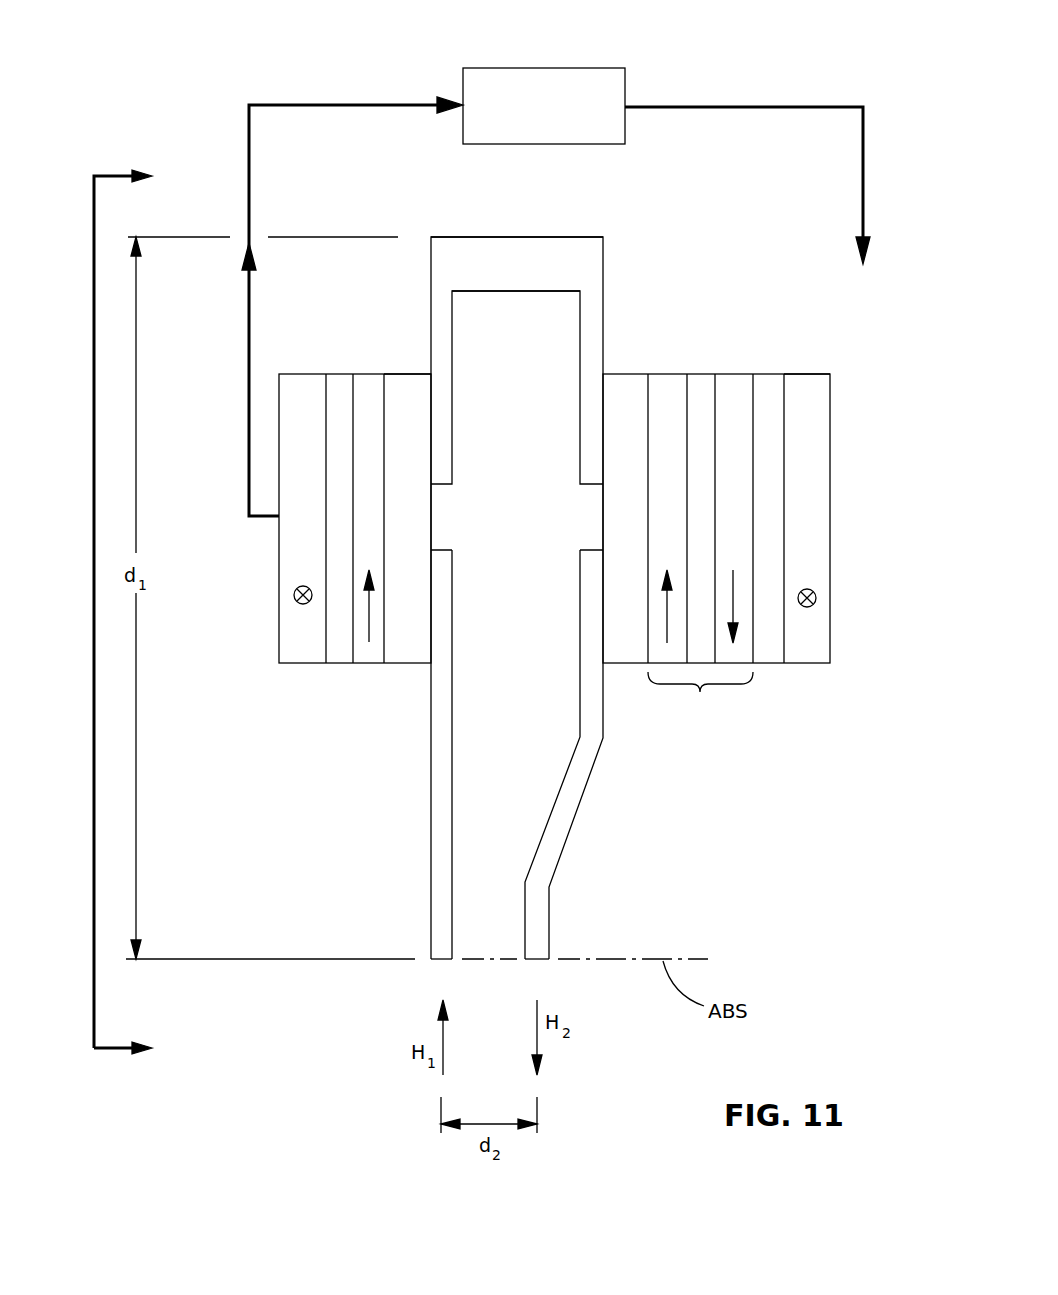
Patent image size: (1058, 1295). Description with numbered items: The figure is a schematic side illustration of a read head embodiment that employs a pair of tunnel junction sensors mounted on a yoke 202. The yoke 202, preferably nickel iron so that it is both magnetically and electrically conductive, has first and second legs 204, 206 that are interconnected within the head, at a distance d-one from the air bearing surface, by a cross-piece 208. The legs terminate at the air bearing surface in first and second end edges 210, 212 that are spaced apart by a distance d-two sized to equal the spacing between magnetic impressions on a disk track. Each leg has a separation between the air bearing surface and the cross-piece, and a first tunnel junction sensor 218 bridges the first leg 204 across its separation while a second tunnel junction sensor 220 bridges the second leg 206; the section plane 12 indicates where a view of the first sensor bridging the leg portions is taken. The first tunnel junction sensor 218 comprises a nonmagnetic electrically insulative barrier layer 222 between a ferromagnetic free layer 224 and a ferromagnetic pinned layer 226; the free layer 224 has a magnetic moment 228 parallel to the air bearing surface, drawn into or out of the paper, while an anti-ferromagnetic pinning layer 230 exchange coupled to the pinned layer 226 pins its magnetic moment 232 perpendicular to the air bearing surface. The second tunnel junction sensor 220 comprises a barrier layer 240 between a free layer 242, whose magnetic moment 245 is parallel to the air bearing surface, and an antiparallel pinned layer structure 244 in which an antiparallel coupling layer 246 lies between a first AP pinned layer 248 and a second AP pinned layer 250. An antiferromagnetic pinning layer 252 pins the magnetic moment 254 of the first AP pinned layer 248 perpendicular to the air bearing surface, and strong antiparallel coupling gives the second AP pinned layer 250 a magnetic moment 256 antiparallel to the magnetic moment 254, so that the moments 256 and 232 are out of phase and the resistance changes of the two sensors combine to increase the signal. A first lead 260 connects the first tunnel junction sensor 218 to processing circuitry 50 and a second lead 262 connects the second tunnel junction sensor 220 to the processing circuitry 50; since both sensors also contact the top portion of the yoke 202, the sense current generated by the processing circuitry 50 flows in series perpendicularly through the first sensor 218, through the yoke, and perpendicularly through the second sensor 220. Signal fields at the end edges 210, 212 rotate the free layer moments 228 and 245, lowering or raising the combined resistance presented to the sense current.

The section plane 12— 12 is at (140, 613).
The processing circuitry 50 is at (540, 68).
The yoke 202 is at (548, 239).
The first leg 204 is at (447, 337).
The second leg 206 is at (588, 366).
The cross-piece 208 is at (485, 243).
The first end edge 210 is at (436, 962).
The second end edge 212 is at (535, 962).
The first tunnel junction sensor 218 is at (279, 560).
The second tunnel junction sensor 220 is at (831, 631).
The barrier layer 222 is at (333, 374).
The free layer 224 is at (302, 374).
The pinned layer 226 is at (368, 374).
The magnetic moment 228 is at (293, 595).
The anti-ferromagnetic pinning layer 230 is at (410, 374).
The magnetic moment 232 is at (365, 626).
The barrier layer 240 is at (771, 374).
The free layer 242 is at (808, 374).
The antiparallel pinned layer structure 244 is at (700, 697).
The magnetic moment 245 is at (815, 594).
The antiparallel coupling layer 246 is at (703, 374).
The first AP pinned layer 248 is at (667, 374).
The second AP pinned layer 250 is at (735, 374).
The antiferromagnetic pinning layer 252 is at (624, 374).
The magnetic moment 254 is at (667, 624).
The magnetic moment 256 is at (735, 598).
The first lead 260 is at (355, 105).
The second lead 262 is at (776, 107).